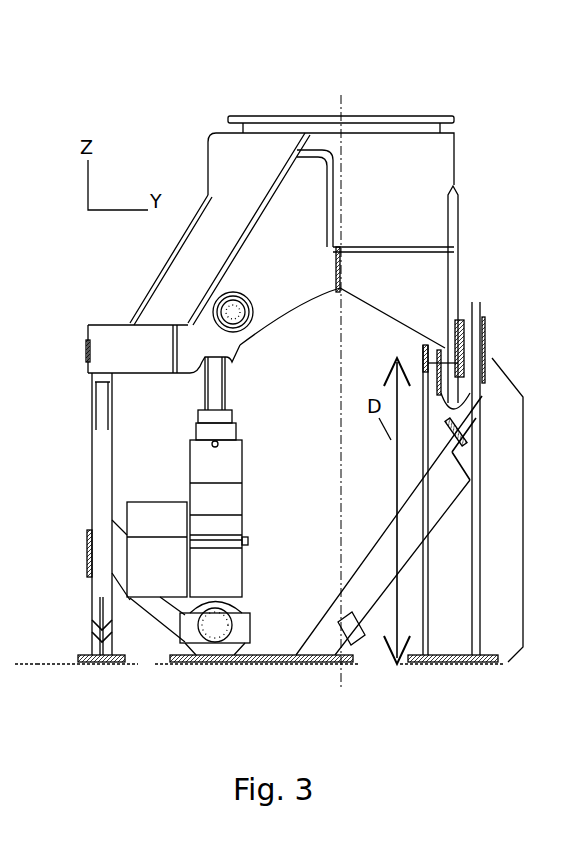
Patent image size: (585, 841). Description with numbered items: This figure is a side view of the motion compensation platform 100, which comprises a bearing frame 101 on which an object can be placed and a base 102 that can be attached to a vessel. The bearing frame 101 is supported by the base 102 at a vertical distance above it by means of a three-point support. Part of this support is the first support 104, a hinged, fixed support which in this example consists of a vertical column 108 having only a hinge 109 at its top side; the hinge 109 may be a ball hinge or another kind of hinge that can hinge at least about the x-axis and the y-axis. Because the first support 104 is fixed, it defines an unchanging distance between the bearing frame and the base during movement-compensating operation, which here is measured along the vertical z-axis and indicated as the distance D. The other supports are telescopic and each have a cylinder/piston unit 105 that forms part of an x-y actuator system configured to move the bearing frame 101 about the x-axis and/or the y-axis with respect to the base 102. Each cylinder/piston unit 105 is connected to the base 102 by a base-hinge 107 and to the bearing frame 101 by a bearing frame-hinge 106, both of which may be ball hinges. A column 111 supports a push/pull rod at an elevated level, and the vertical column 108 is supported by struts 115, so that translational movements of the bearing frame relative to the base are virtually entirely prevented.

The motion compensation platform 100 is at (486, 109).
The bearing frame 101 is at (220, 147).
The base 102 is at (205, 663).
The first support 104 is at (523, 512).
The cylinder/piston unit 105 is at (230, 500).
The bearing frame-hinge 106 is at (245, 315).
The base-hinge 107 is at (220, 630).
The vertical column 108 is at (458, 623).
The hinge 109 is at (482, 347).
The column 111 is at (97, 488).
The struts 115 is at (390, 548).